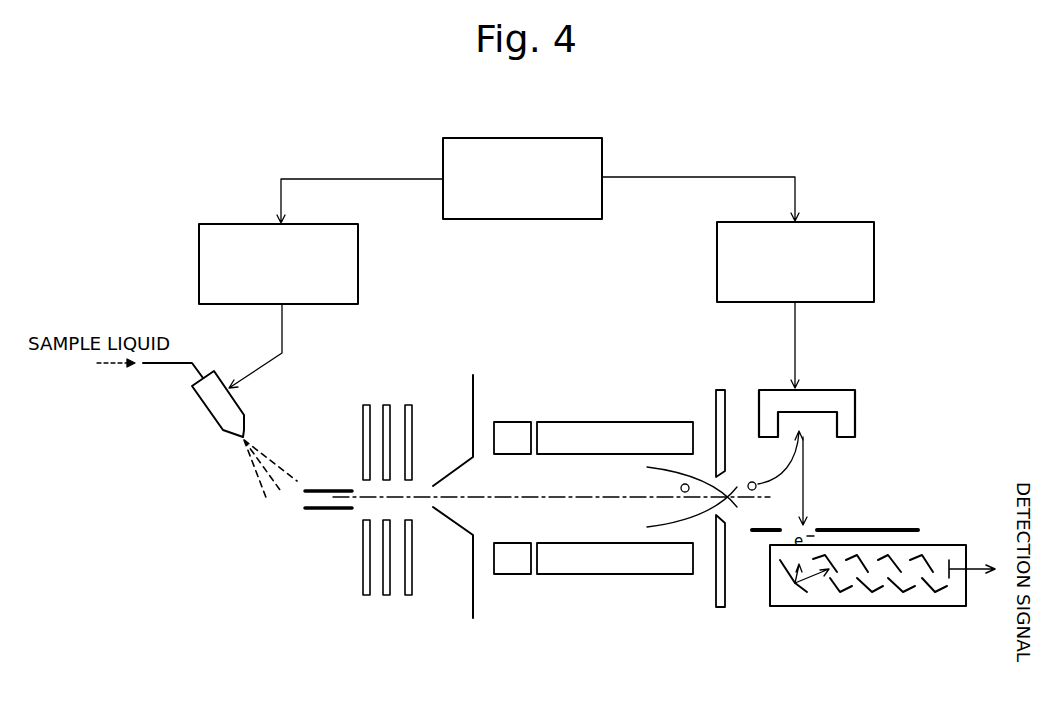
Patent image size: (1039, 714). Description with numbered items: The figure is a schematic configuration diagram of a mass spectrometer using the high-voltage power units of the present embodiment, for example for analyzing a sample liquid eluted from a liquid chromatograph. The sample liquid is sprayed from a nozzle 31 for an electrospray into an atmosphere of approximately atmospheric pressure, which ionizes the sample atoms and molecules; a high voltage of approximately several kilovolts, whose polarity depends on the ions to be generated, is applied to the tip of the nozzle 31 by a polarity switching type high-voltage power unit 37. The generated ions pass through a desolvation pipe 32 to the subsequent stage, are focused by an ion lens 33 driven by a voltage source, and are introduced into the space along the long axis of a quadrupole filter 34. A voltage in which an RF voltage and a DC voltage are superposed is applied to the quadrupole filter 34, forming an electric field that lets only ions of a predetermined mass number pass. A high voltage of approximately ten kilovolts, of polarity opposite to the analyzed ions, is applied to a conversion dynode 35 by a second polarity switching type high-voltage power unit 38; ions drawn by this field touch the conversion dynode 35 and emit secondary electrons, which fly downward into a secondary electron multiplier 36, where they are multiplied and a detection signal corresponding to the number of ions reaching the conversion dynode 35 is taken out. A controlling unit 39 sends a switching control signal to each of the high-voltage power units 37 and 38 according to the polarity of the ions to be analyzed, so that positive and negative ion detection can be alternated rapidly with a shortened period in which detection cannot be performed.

The nozzle 31 is at (208, 412).
The desolvation pipe 32 is at (310, 513).
The ion lens 33 is at (417, 396).
The quadrupole filter 34 is at (551, 401).
The conversion dynode 35 is at (823, 388).
The secondary electron multiplier 36 is at (866, 607).
The high-voltage power unit 37 is at (197, 253).
The high-voltage power unit 38 is at (717, 252).
The controlling unit 39 is at (603, 152).